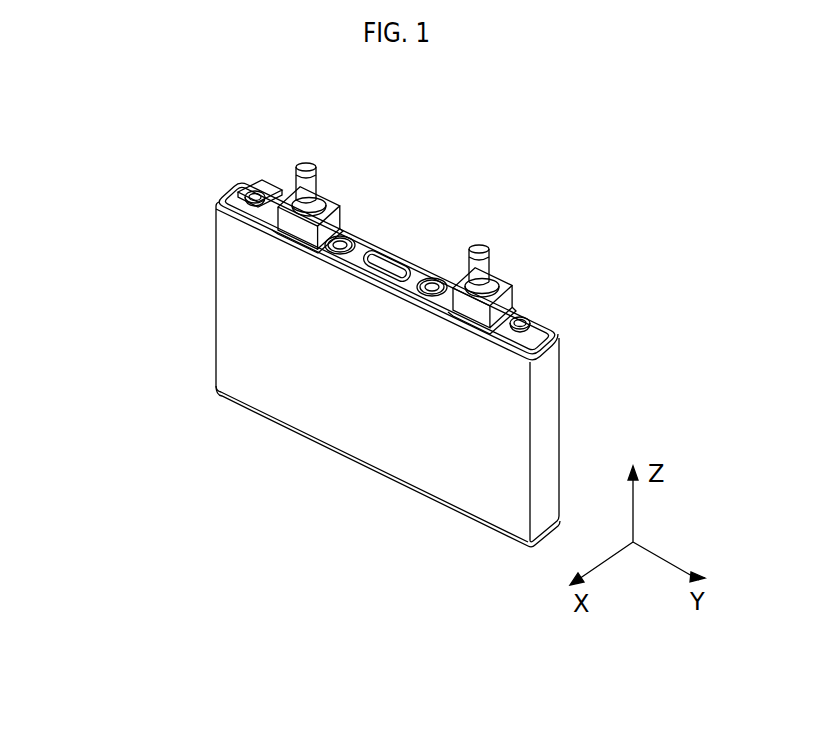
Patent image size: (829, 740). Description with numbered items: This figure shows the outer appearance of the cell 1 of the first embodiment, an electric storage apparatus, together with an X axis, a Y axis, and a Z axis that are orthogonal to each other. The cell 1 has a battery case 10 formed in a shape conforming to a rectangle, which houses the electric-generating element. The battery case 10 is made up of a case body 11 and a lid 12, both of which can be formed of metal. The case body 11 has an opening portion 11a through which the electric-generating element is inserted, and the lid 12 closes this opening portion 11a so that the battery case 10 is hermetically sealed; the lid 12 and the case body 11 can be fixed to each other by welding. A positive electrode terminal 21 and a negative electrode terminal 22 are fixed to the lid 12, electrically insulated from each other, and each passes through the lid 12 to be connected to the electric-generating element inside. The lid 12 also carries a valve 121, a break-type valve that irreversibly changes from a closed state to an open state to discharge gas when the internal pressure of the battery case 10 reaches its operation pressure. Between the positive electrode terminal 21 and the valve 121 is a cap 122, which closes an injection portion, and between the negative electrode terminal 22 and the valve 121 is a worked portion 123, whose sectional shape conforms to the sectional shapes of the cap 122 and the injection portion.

The cell 1 is at (565, 319).
The battery case 10 is at (329, 338).
The case body 11 is at (243, 306).
The opening portion 11a is at (250, 232).
The lid 12 is at (363, 251).
The valve 121 is at (390, 267).
The cap 122 is at (343, 243).
The worked portion 123 is at (440, 287).
The positive electrode terminal 21 is at (302, 190).
The negative electrode terminal 22 is at (488, 274).